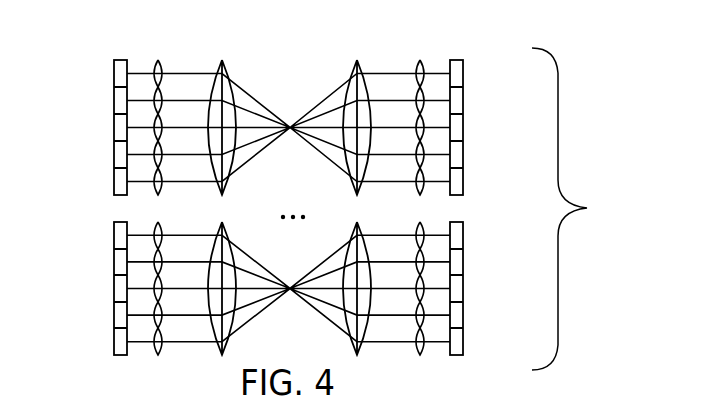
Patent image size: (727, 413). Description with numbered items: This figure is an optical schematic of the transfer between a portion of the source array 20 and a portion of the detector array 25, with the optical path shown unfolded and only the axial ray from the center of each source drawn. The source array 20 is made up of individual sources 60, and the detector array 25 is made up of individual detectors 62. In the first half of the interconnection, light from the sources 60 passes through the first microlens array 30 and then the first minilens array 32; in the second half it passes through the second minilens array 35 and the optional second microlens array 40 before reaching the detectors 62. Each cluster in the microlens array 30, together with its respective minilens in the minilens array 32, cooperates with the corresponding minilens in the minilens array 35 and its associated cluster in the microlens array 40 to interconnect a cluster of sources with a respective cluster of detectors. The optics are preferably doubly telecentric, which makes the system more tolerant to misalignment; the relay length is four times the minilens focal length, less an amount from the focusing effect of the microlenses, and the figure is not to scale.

The source array 20 is at (125, 55).
The detector array 25 is at (459, 55).
The first microlens array 30 is at (158, 55).
The first minilens array 32 is at (223, 55).
The second minilens array 35 is at (358, 55).
The second microlens array 40 is at (420, 55).
The source 60 is at (113, 100).
The detector 62 is at (463, 73).